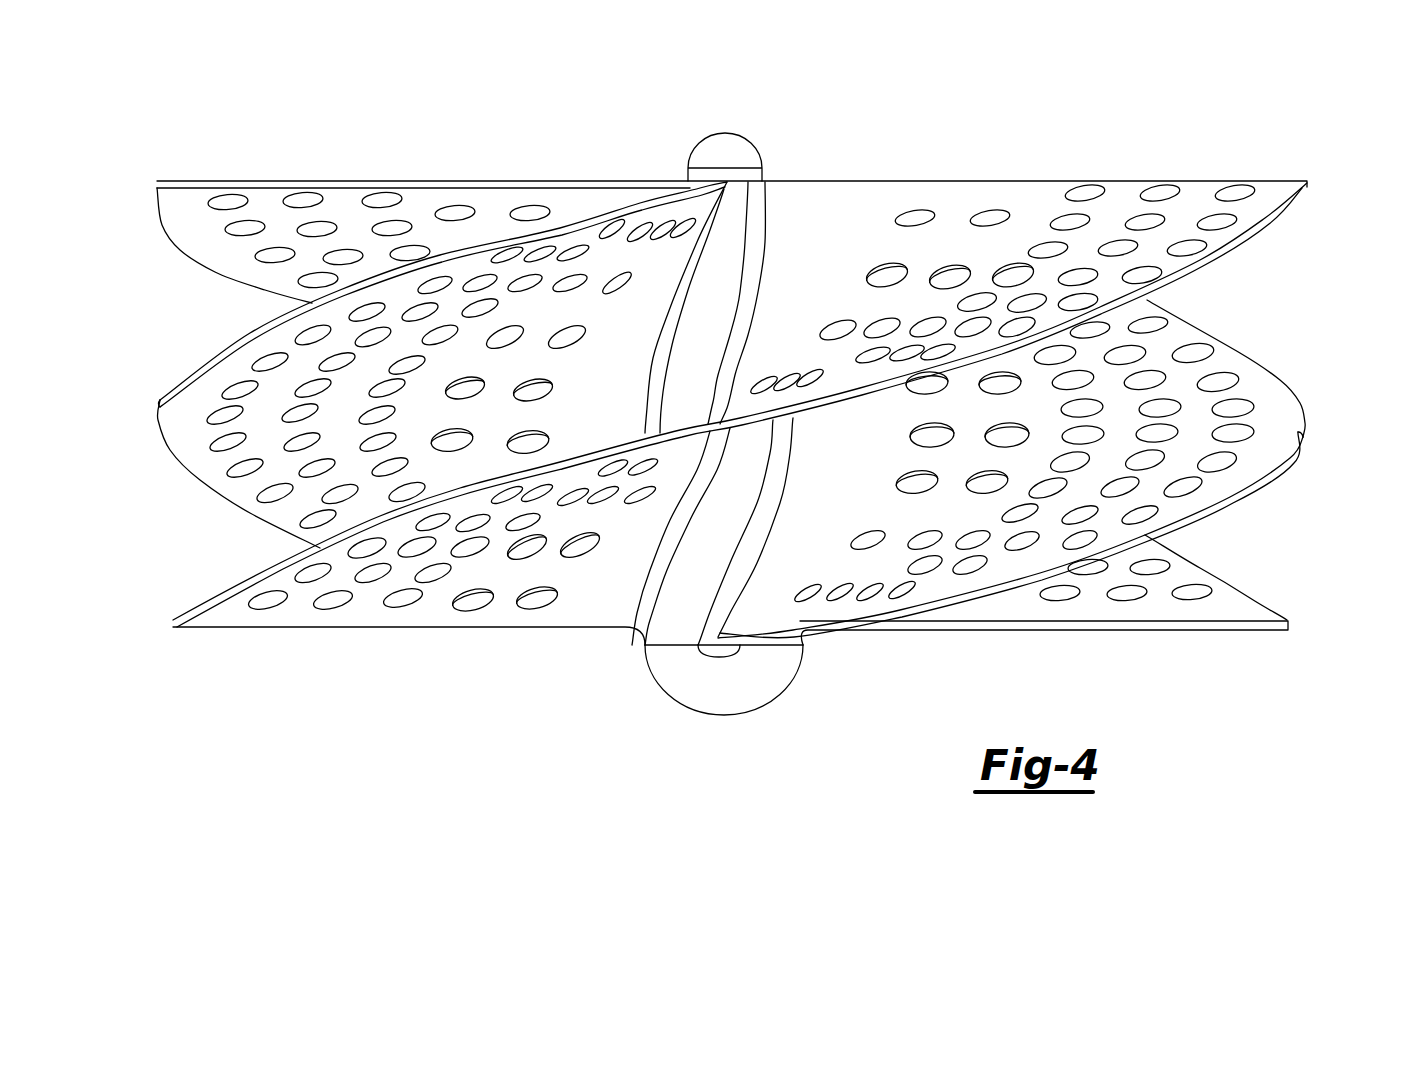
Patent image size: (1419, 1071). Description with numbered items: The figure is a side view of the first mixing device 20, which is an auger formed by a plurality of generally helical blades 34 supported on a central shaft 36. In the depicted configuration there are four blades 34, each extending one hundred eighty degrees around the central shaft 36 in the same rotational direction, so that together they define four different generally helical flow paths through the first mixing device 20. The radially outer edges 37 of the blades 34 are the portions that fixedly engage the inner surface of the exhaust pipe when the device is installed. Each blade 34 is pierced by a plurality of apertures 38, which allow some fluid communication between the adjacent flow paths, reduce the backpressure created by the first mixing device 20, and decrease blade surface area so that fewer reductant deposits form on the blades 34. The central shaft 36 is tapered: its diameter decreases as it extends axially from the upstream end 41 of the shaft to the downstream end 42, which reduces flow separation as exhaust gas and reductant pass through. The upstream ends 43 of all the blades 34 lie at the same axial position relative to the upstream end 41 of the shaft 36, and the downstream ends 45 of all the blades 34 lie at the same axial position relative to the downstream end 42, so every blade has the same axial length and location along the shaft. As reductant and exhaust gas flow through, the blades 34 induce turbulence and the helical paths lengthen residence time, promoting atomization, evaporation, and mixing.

The first mixing device 20 is at (1066, 84).
The helical blades 34 is at (180, 203).
The central shaft 36 is at (768, 690).
The radially outer edges 37 is at (157, 423).
The apertures 38 is at (530, 206).
The upstream end 41 is at (720, 714).
The downstream end 42 is at (730, 134).
The upstream ends 43 is at (593, 627).
The downstream ends 45 is at (698, 188).